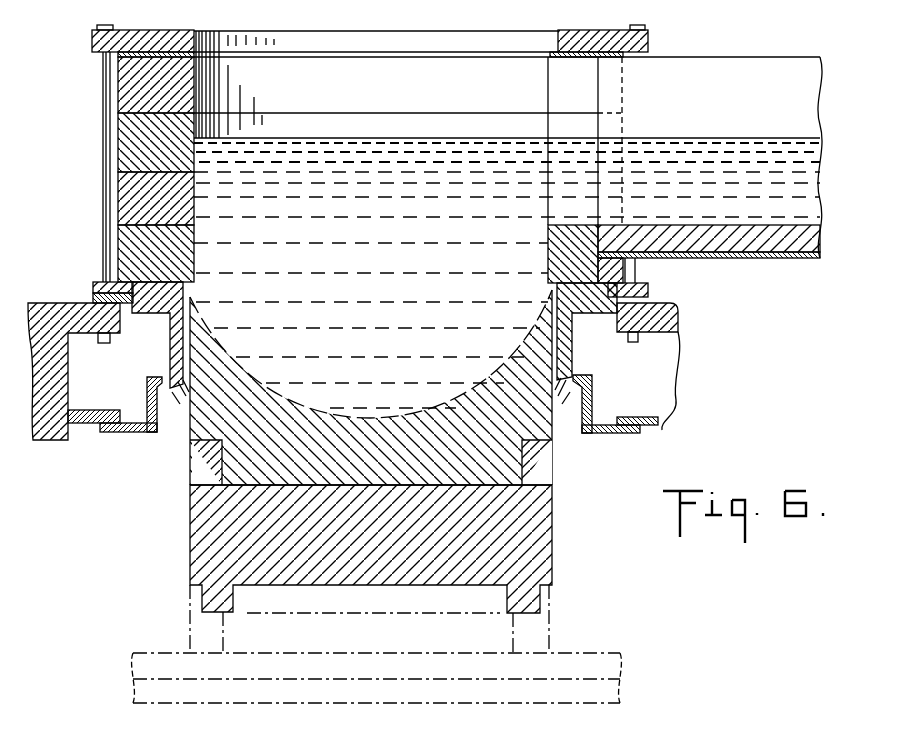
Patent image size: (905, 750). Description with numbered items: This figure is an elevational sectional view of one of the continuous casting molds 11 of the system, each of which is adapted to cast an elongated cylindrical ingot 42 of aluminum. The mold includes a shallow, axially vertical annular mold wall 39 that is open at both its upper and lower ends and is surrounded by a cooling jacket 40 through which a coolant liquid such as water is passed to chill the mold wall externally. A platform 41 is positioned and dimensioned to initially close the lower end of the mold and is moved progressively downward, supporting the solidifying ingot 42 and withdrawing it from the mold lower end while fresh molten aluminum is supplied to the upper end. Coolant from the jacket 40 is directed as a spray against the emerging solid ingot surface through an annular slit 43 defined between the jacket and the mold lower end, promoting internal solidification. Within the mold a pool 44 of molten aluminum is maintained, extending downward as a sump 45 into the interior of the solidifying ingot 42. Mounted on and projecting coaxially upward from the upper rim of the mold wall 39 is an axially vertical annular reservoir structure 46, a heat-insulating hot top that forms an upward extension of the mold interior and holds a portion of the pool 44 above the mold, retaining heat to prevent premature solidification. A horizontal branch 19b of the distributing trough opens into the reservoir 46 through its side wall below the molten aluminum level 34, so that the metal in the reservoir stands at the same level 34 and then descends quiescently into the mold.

The annular reservoir structure 46 is at (118, 133).
The molten aluminum level 34 is at (393, 138).
The horizontal branch of distributing trough 19b is at (735, 222).
The pool of molten aluminum 44 is at (507, 275).
The ingot 42 is at (213, 417).
The sump 45 is at (363, 407).
The platform 41 is at (540, 542).
The annular slit 43 is at (170, 375).
The annular mold wall 39 is at (568, 352).
The cooling jacket 40 is at (147, 405).
The continuous casting mold 11 is at (575, 443).